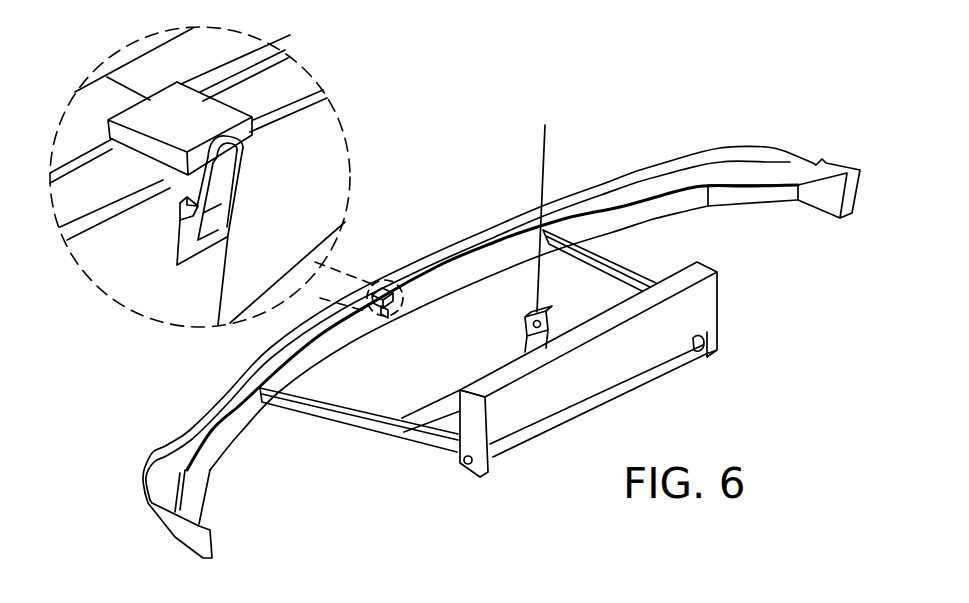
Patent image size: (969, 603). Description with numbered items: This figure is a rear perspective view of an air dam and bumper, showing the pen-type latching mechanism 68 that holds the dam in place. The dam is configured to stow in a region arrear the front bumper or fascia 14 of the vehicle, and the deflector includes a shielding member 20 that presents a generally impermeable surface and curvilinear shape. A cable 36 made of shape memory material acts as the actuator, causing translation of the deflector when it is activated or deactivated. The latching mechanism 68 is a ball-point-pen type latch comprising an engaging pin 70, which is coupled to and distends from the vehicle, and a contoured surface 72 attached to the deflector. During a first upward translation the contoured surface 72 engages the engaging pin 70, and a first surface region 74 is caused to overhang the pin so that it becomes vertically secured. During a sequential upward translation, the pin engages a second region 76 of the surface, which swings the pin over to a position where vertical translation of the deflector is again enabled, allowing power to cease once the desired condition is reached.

The front bumper or fascia 14 is at (230, 57).
The shielding member 20 is at (308, 217).
The cable 36 is at (549, 134).
The latching mechanism 68 is at (390, 280).
The engaging pin 70 is at (252, 117).
The contoured surface 72 is at (213, 267).
The first surface region 74 is at (200, 243).
The second region 76 is at (243, 165).